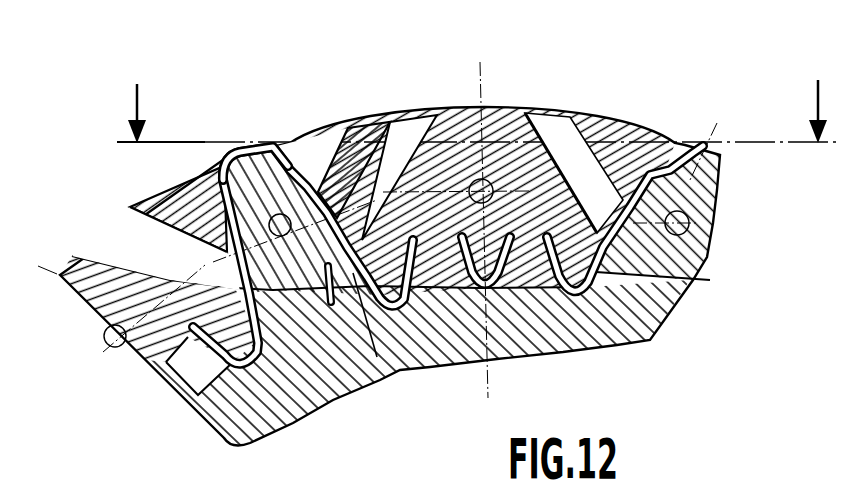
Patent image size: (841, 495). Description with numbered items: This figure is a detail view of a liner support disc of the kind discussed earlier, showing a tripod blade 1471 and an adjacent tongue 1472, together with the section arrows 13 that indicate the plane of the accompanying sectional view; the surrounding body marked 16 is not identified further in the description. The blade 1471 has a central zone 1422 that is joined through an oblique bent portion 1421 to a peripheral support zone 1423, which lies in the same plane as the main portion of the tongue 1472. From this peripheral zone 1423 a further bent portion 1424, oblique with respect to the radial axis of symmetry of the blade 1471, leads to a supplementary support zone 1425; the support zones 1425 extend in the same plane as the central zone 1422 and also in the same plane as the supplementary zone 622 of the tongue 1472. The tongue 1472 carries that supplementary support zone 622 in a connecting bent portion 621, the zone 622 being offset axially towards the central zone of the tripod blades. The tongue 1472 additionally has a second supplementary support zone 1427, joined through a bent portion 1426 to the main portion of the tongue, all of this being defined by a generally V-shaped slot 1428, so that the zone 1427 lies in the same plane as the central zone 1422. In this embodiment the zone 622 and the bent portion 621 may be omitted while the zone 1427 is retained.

The section line 13- 13 is at (478, 88).
The housing body 16 is at (585, 365).
The connecting bent portion 621 is at (175, 200).
The supplementary support zone 622 is at (247, 168).
The oblique bent portion 1421 is at (555, 132).
The central zone 1422 is at (690, 280).
The peripheral support zone 1423 is at (407, 130).
The bent portion 1424 is at (332, 138).
The supplementary support zone 1425 is at (298, 148).
The bent portion 1426 is at (380, 380).
The supplementary support zone 1427 is at (318, 340).
The V-shaped slot 1428 is at (312, 325).
The blade 1471 is at (507, 91).
The tongue 1472 is at (700, 137).